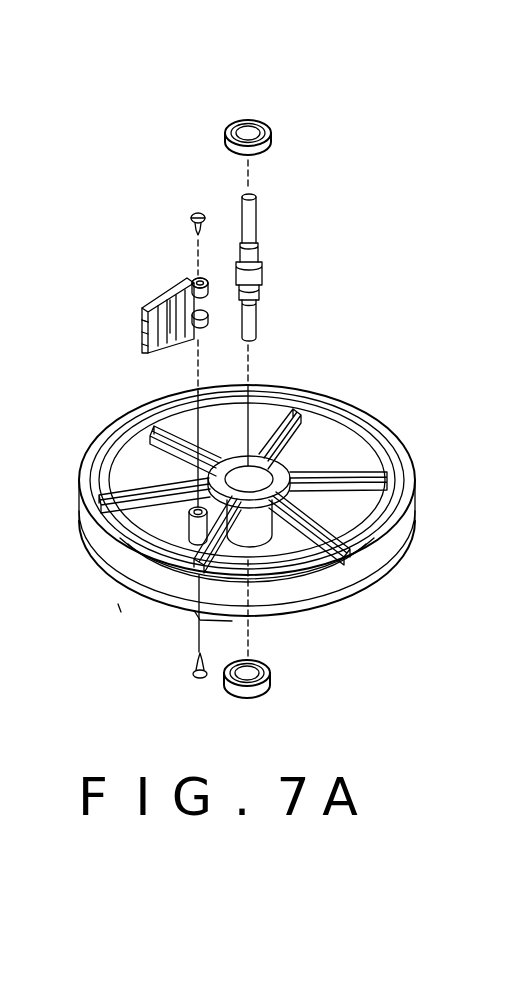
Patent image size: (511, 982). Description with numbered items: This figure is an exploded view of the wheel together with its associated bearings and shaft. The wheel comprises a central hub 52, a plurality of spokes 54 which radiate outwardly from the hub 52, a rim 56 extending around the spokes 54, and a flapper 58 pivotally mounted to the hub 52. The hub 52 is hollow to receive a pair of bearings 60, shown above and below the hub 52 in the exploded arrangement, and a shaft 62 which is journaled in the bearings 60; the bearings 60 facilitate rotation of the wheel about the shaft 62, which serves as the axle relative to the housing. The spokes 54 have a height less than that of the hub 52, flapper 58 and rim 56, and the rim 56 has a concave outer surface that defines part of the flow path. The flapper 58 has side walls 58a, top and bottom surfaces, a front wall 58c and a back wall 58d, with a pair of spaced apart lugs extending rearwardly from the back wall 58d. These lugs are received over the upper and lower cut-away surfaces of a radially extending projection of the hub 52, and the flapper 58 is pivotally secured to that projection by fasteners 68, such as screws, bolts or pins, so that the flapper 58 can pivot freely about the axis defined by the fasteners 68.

The central hub 52 is at (263, 543).
The spokes 54 is at (362, 500).
The rim 56 is at (380, 423).
The flapper 58 is at (139, 348).
The side walls 58a is at (170, 333).
The front wall 58c is at (140, 327).
The back wall 58d is at (205, 293).
The bearings 60 is at (271, 147).
The shaft 62 is at (258, 313).
The fasteners 68 is at (198, 212).